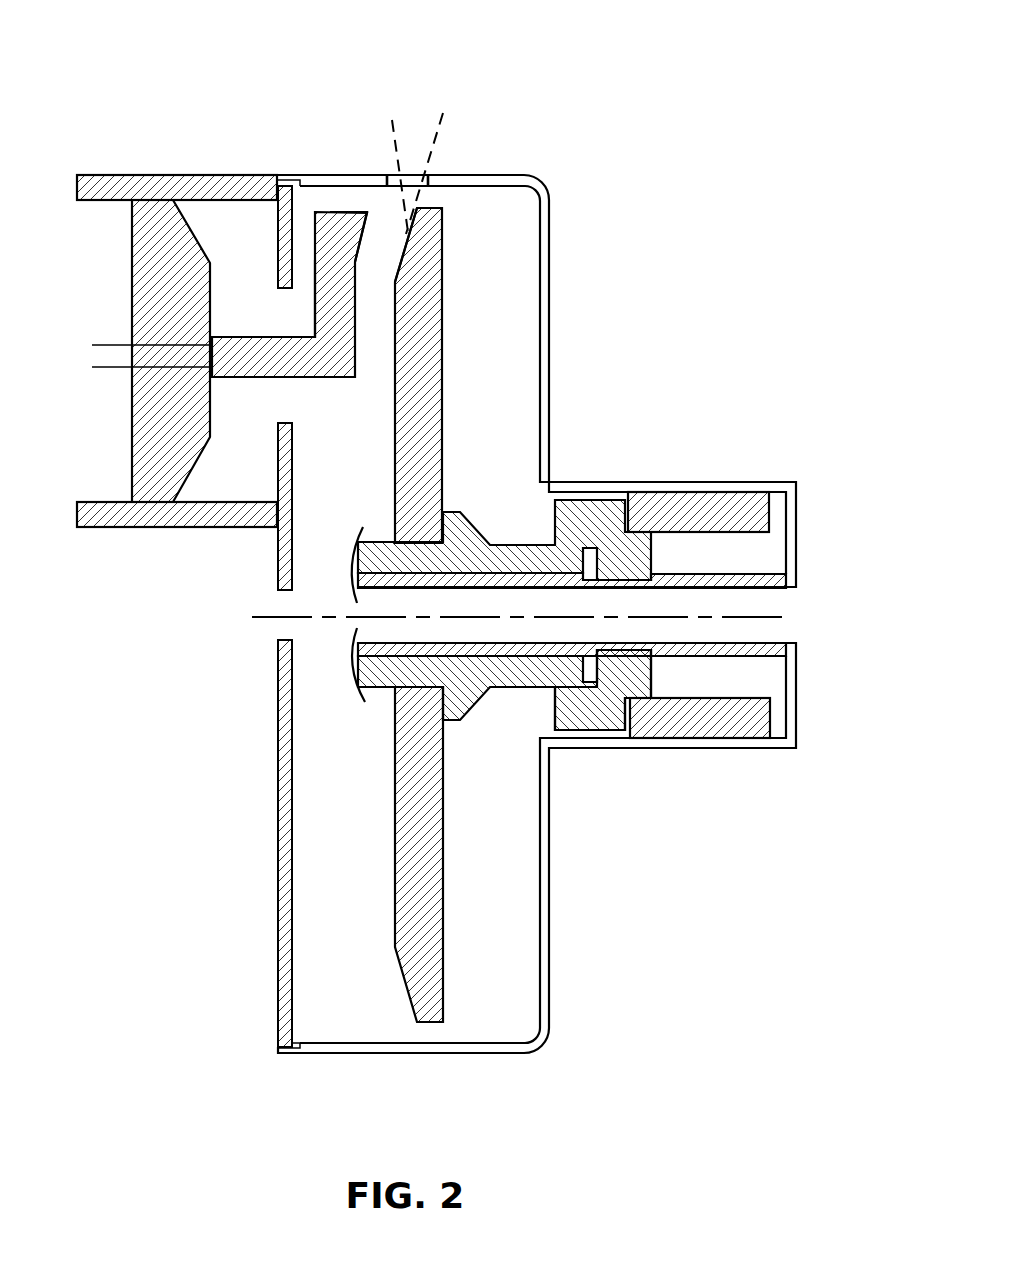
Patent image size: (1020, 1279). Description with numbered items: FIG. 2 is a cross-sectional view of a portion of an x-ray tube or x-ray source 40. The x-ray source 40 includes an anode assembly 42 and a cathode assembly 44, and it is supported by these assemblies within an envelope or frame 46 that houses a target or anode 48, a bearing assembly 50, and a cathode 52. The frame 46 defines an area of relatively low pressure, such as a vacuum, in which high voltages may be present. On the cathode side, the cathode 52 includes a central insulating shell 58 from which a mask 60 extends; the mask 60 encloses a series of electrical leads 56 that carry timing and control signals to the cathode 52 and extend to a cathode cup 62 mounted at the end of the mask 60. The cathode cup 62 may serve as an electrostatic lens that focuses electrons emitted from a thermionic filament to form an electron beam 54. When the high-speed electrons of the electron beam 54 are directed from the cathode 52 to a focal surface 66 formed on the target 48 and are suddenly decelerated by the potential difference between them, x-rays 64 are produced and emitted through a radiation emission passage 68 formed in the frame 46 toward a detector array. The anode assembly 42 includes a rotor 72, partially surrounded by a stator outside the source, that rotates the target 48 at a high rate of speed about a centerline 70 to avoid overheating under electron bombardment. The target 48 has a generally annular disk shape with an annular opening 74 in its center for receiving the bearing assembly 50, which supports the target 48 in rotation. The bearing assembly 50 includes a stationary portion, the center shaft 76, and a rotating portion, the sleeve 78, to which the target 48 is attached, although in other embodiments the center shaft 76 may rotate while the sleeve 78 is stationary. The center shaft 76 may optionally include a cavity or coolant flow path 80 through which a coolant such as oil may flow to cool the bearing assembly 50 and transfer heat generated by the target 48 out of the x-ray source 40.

The x-ray source 40 is at (464, 60).
The anode assembly 42 is at (556, 180).
The cathode assembly 44 is at (229, 145).
The frame 46 is at (315, 1056).
The target 48 is at (444, 345).
The bearing assembly 50 is at (660, 674).
The cathode 52 is at (303, 297).
The electron beam 54 is at (368, 249).
The electrical leads 56 is at (102, 345).
The central insulating shell 58 is at (133, 228).
The mask 60 is at (308, 378).
The cathode cup 62 is at (346, 208).
The x-rays 64 is at (448, 133).
The focal surface 66 is at (396, 982).
The radiation emission passage 68 is at (430, 182).
The centerline 70 is at (310, 614).
The rotor 72 is at (705, 492).
The annular opening 74 is at (383, 538).
The center shaft 76 is at (515, 641).
The sleeve 78 is at (522, 694).
The coolant flow path 80 is at (794, 618).